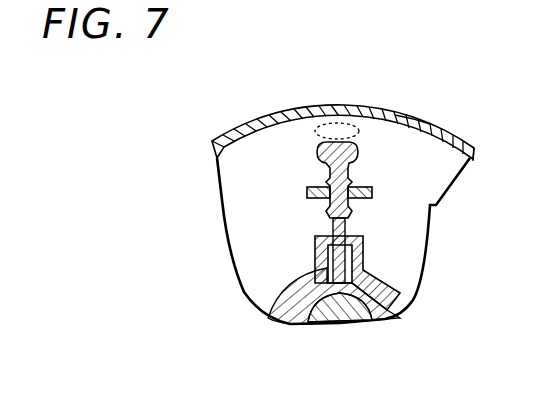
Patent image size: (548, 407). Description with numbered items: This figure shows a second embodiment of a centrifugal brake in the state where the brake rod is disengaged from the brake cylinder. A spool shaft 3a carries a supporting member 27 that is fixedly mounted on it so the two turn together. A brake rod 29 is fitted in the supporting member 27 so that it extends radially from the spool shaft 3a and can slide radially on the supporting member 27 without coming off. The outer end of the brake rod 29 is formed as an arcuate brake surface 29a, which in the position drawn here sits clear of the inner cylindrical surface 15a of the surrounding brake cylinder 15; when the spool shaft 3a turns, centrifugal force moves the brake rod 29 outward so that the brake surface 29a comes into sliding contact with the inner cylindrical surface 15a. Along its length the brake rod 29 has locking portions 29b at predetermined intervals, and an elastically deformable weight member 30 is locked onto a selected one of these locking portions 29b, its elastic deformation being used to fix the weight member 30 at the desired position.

The spool shaft 3a is at (357, 318).
The brake cylinder 15 is at (243, 128).
The inner cylindrical surface 15a is at (410, 142).
The supporting member 27 is at (385, 290).
The brake rod 29 is at (348, 227).
The brake surface 29a is at (338, 142).
The locking portions 29b is at (365, 208).
The weight member 30 is at (306, 192).